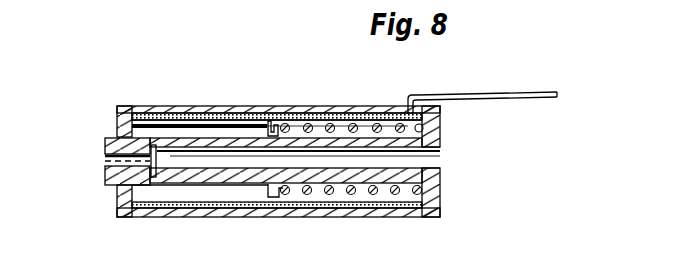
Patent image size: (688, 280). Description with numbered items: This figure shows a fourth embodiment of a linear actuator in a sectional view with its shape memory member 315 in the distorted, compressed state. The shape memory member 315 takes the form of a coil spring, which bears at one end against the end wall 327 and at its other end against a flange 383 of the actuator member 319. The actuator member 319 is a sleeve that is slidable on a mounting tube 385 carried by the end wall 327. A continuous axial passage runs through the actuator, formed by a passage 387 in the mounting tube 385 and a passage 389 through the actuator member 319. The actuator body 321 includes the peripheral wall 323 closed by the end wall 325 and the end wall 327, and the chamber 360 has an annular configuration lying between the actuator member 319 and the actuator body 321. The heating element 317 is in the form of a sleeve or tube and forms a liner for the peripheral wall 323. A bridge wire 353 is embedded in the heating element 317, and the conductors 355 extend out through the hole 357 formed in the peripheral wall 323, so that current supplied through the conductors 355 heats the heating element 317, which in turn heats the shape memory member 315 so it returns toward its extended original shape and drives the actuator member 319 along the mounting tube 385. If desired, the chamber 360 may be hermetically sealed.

The shape memory member 315 is at (313, 112).
The heating element 317 is at (155, 123).
The actuator member 319 is at (108, 178).
The actuator body 321 is at (261, 137).
The peripheral wall 323 is at (218, 107).
The end wall 325 is at (117, 123).
The end wall 327 is at (432, 120).
The bridge wire 353 is at (382, 113).
The conductors 355 is at (525, 90).
The hole 357 is at (403, 93).
The chamber 360 is at (153, 193).
The flange 383 is at (273, 188).
The mounting tube 385 is at (196, 186).
The passage 387 is at (423, 158).
The passage 389 is at (105, 160).